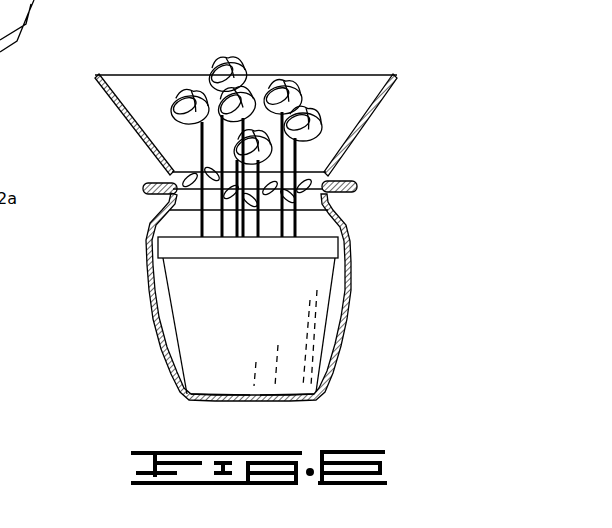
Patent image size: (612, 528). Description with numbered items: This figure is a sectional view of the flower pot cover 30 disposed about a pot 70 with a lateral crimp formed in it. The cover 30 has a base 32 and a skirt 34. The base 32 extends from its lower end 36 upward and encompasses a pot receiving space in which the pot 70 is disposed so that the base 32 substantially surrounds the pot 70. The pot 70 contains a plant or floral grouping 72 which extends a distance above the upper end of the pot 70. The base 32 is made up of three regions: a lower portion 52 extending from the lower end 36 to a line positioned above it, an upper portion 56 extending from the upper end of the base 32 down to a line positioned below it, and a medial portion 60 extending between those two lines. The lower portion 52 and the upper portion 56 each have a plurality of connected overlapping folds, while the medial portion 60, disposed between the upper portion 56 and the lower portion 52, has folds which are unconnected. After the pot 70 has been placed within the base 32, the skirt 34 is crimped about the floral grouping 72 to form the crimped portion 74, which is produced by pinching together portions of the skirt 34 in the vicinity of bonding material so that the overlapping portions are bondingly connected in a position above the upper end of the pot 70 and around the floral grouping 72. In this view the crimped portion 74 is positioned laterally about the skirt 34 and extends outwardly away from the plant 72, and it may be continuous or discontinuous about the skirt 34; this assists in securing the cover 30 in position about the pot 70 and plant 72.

The cover 30 is at (230, 249).
The base 32 is at (143, 322).
The skirt 34 is at (396, 113).
The lower end 36 is at (186, 398).
The lower portion 52 is at (328, 391).
The upper portion 56 is at (346, 251).
The medial portion 60 is at (288, 314).
The pot 70 is at (320, 340).
The floral grouping 72 is at (308, 88).
The crimped portion 74 is at (143, 188).